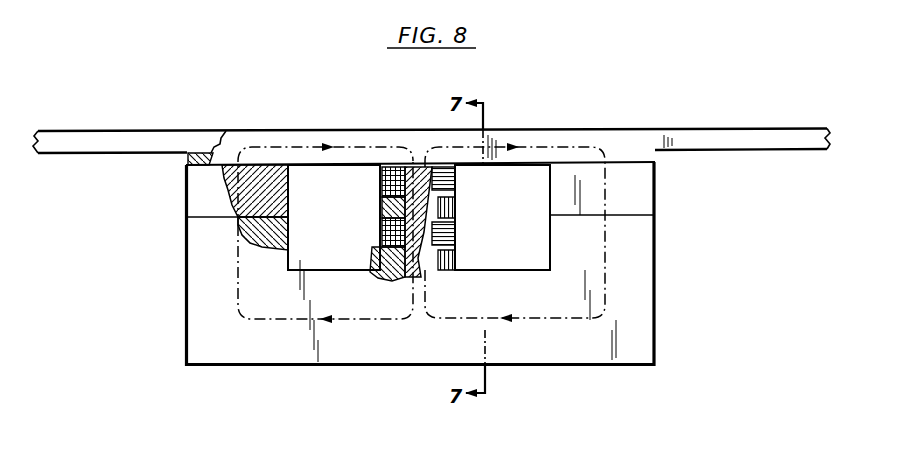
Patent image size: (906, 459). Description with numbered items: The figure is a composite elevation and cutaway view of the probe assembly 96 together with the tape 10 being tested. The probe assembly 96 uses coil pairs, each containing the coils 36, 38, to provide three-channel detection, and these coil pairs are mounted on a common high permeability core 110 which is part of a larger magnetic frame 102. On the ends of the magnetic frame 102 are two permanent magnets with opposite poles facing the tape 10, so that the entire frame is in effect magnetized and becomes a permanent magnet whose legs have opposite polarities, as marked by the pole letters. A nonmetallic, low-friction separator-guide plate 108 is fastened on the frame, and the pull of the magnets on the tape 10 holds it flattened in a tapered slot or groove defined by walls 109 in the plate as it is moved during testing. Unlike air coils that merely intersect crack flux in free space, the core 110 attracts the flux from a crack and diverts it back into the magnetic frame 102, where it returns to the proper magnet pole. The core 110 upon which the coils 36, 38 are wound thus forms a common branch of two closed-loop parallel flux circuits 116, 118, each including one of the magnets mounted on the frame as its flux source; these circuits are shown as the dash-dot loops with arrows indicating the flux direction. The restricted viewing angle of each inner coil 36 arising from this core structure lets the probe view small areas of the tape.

The mounting plate 10 is at (109, 129).
The inner coil 36 is at (455, 183).
The coil 38 is at (455, 229).
The probe assembly 96 is at (180, 303).
The magnetic frame 102 is at (660, 300).
The separator-guide plate 108 is at (183, 159).
The walls 109 is at (629, 137).
The high permeability core 110 is at (457, 260).
The closed loop parallel flux circuit 116 is at (348, 326).
The closed loop parallel flux circuit 118 is at (527, 322).